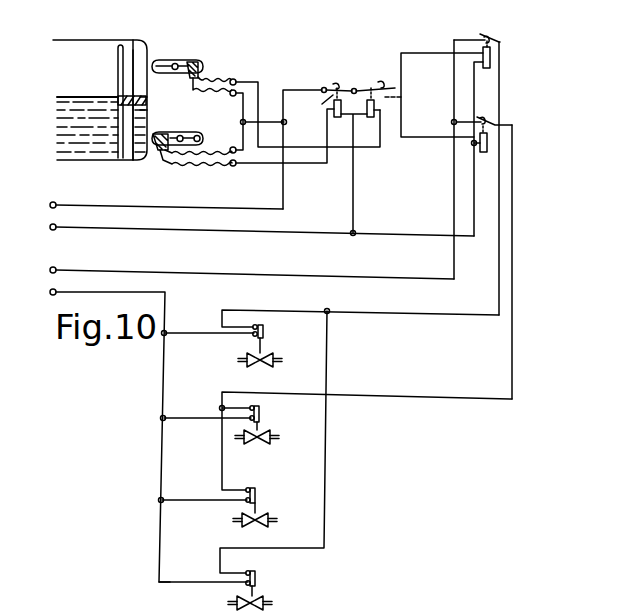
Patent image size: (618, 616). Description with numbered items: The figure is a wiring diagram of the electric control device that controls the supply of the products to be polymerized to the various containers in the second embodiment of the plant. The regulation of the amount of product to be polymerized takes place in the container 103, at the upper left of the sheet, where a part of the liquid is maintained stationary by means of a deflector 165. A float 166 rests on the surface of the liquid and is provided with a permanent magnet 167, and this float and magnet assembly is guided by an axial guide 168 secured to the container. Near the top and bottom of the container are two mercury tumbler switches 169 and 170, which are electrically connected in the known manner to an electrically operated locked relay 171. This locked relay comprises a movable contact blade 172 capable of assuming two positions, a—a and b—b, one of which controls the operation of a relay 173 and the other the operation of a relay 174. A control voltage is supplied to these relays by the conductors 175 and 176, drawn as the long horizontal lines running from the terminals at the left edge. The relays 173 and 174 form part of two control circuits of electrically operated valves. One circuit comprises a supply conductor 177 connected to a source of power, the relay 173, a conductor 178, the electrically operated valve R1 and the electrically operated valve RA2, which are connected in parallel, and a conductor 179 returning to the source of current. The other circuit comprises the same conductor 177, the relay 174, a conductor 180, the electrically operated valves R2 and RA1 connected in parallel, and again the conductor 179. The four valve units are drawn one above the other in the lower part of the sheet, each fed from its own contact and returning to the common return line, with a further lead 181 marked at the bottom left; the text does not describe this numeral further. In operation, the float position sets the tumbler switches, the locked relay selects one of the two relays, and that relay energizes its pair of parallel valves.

The container 103 is at (83, 40).
The deflector 165 is at (118, 70).
The float 166 is at (147, 112).
The permanent magnet 167 is at (147, 99).
The axial guide 168 is at (135, 56).
The mercury tumbler switch 169 is at (180, 61).
The mercury tumbler switch 170 is at (191, 132).
The electrically operated locked relay 171 is at (359, 76).
The movable contact blade 172 is at (368, 88).
The relay 173 is at (509, 64).
The relay 174 is at (525, 138).
The conductor 175 is at (190, 210).
The conductor 176 is at (186, 233).
The supply conductor 177 is at (183, 276).
The conductor 178 is at (398, 314).
The conductor 179 is at (162, 386).
The conductor 180 is at (400, 401).
The conductor 181 is at (98, 606).
The electrically operated valve R1 is at (264, 338).
The electrically operated valve RA1 is at (261, 422).
The electrically operated valve R2 is at (258, 502).
The electrically operated valve RA2 is at (256, 586).